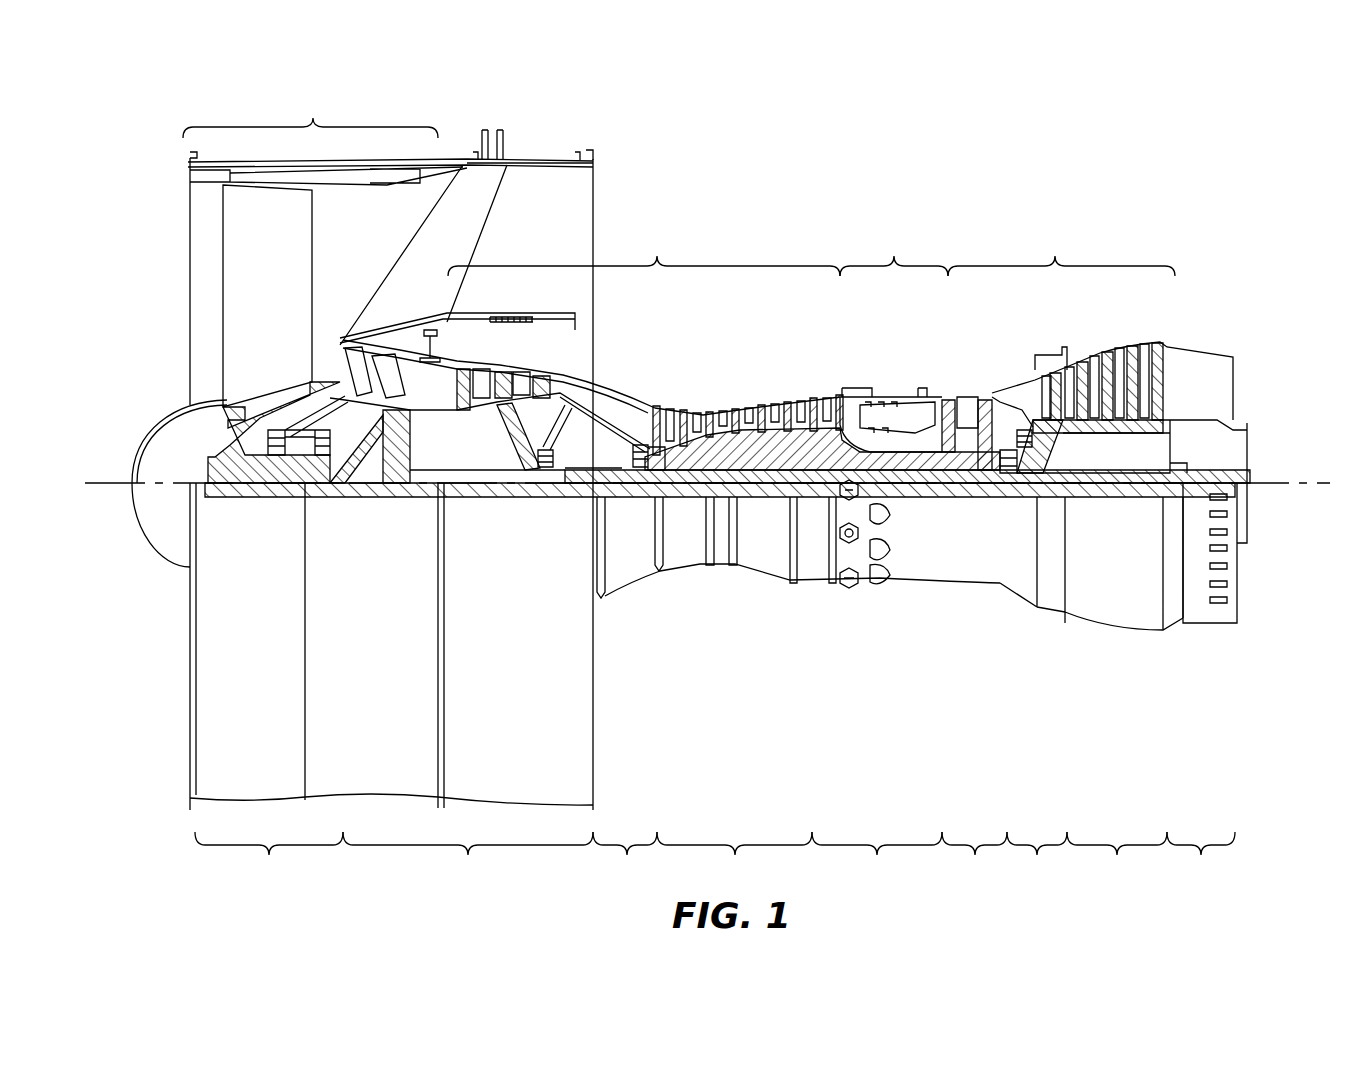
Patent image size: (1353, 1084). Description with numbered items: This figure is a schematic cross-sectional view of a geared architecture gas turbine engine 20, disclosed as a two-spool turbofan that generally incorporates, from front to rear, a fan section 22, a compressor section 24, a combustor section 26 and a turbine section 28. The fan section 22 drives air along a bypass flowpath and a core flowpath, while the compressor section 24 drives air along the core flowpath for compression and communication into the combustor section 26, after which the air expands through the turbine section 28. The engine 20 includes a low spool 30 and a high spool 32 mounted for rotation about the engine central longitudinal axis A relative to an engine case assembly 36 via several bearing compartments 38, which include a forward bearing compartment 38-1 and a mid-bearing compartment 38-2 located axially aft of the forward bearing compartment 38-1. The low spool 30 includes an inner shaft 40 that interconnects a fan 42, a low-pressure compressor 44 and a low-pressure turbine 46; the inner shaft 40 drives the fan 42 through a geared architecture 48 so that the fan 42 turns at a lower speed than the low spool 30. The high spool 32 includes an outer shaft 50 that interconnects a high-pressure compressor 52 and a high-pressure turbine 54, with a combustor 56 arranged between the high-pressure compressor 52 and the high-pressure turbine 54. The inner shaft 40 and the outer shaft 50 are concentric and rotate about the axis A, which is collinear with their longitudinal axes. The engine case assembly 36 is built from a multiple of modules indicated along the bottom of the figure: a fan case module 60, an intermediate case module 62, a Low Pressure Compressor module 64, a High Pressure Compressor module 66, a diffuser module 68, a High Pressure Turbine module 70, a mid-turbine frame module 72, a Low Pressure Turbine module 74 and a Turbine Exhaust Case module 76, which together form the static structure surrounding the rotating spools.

The gas turbine engine 20 is at (928, 202).
The fan section 22 is at (310, 114).
The compressor section 24 is at (644, 255).
The combustor section 26 is at (894, 255).
The turbine section 28 is at (1061, 255).
The low spool 30 is at (766, 490).
The high spool 32 is at (804, 440).
The engine case assembly 36 is at (158, 846).
The bearing compartments 38 is at (1010, 486).
The forward bearing compartment 38-1 is at (272, 490).
The mid-bearing compartment 38-2 is at (548, 490).
The inner shaft 40 is at (616, 498).
The fan 42 is at (273, 300).
The low-pressure compressor 44 is at (525, 378).
The low-pressure turbine 46 is at (1105, 365).
The geared architecture 48 is at (386, 488).
The outer shaft 50 is at (902, 492).
The high-pressure compressor 52 is at (752, 452).
The high-pressure turbine 54 is at (965, 395).
The combustor 56 is at (880, 418).
The fan case module 60 is at (269, 857).
The intermediate case module 62 is at (468, 857).
The Low Pressure Compressor module 64 is at (625, 853).
The High Pressure Compressor module 66 is at (734, 857).
The diffuser module 68 is at (877, 857).
The High Pressure Turbine module 70 is at (974, 853).
The mid-turbine frame module 72 is at (1037, 853).
The Low Pressure Turbine module 74 is at (1117, 857).
The Turbine Exhaust Case module 76 is at (1201, 857).
The engine central longitudinal axis A is at (1318, 480).